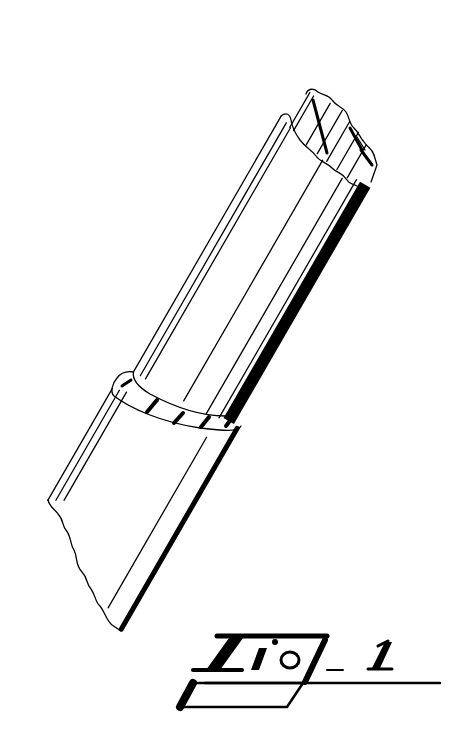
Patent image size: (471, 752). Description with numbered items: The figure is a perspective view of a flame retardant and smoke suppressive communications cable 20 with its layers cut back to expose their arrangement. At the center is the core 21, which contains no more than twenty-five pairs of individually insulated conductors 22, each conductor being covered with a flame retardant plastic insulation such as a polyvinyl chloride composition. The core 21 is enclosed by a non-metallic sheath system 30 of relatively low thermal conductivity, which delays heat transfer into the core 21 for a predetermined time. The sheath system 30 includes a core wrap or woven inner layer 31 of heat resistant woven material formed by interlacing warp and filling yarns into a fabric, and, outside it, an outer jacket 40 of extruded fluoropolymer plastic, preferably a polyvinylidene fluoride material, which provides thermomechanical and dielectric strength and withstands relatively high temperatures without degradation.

The communications cable 20 is at (298, 383).
The core 21 is at (350, 127).
The insulated conductor 22 is at (318, 48).
The sheath system 30 is at (179, 294).
The woven inner layer 31 is at (286, 282).
The outer jacket 40 is at (168, 499).